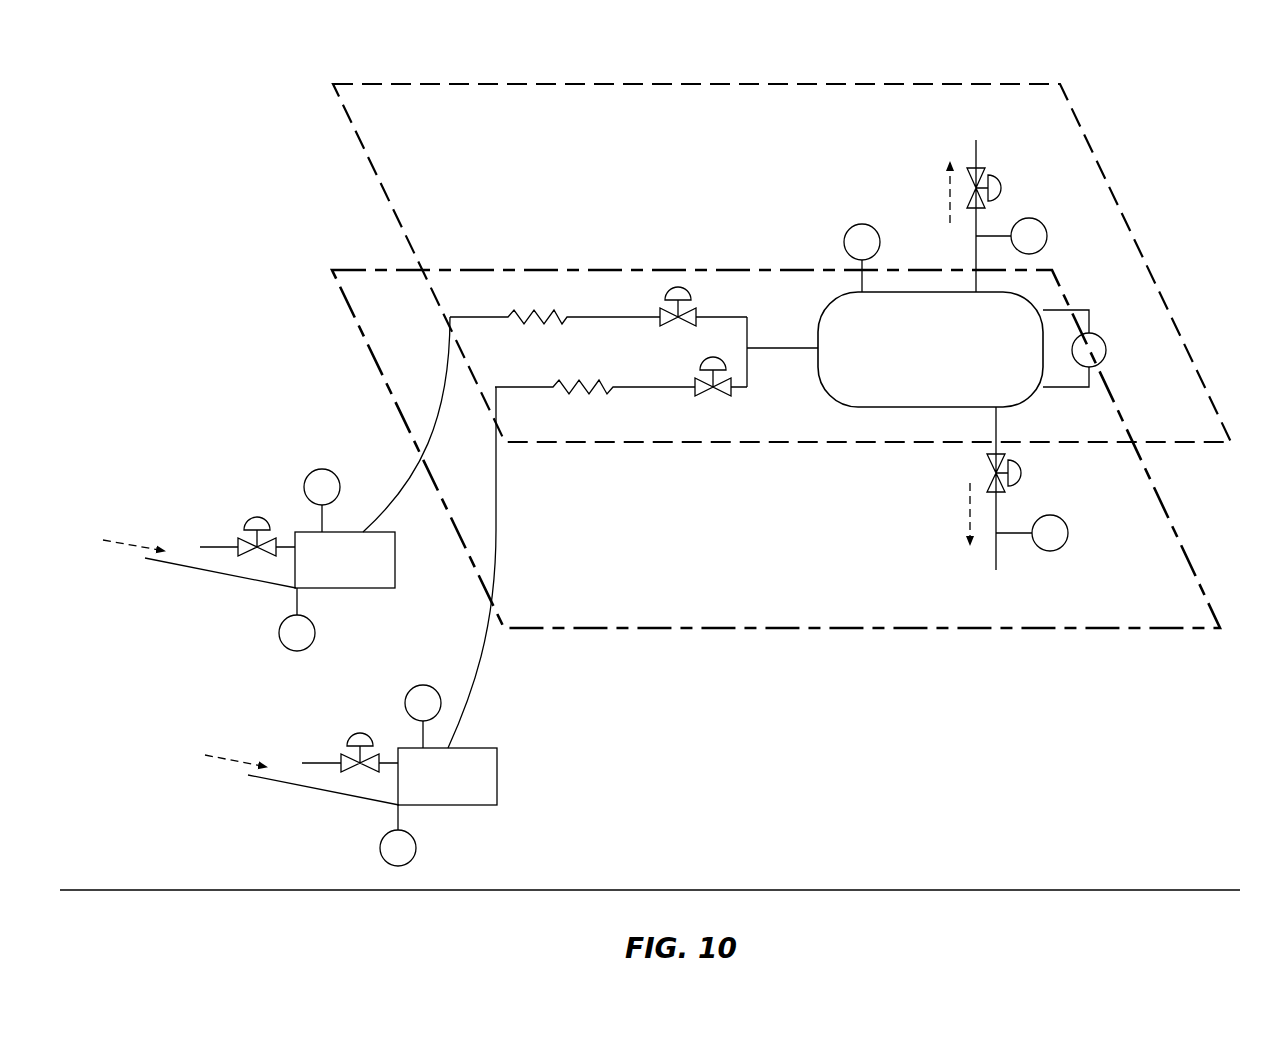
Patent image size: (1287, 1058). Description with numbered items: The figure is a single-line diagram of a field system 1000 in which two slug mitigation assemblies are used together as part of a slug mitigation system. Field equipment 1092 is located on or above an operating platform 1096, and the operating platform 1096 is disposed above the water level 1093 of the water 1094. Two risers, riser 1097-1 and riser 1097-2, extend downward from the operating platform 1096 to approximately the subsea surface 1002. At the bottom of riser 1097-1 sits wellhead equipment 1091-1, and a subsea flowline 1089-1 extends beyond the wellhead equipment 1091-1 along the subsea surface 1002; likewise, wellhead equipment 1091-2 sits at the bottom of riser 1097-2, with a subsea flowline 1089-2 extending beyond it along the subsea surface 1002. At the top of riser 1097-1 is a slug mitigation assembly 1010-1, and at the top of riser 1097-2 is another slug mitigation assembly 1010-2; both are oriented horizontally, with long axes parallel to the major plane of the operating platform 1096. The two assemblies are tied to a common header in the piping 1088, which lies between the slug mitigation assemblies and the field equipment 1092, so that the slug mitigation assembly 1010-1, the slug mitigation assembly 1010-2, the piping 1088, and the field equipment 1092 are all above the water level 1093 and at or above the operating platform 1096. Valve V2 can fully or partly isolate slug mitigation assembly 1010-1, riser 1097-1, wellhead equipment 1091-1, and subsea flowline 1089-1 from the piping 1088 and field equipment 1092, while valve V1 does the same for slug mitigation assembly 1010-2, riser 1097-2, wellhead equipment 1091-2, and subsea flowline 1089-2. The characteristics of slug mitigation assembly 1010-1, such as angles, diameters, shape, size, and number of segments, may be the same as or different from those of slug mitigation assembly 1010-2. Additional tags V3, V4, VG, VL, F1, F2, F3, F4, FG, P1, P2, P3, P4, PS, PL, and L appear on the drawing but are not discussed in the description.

The field system 1000 is at (150, 78).
The subsea surface 1002 is at (1053, 890).
The slug mitigation assembly 1010-1 is at (538, 328).
The slug mitigation assembly 1010-2 is at (583, 398).
The piping 1088 is at (773, 349).
The subsea flowline 1089-1 is at (213, 577).
The subsea flowline 1089-2 is at (313, 793).
The wellhead equipment 1091-1 is at (307, 577).
The wellhead equipment 1091-2 is at (409, 793).
The field equipment 1092 is at (902, 361).
The water level 1093 is at (1180, 537).
The water 1094 is at (912, 764).
The operating platform 1096 is at (1093, 153).
The riser 1097-1 is at (433, 413).
The riser 1097-2 is at (497, 532).
The valve V1 is at (709, 373).
The valve V2 is at (690, 306).
The valve V3 is at (350, 746).
The valve V4 is at (247, 529).
The gas valve VG is at (991, 216).
The liquid valve VL is at (1010, 488).
The flow F1 is at (206, 779).
The flow F2 is at (104, 565).
The flow sensor F3 is at (423, 716).
The flow sensor F4 is at (322, 500).
The gas flow sensor FG is at (1011, 236).
The pressure P1 is at (236, 749).
The pressure P2 is at (134, 534).
The pressure sensor P3 is at (398, 835).
The pressure sensor P4 is at (297, 619).
The separator pressure sensor PS is at (862, 258).
The liquid pressure sensor PL is at (1032, 533).
The level sensor L is at (1074, 348).